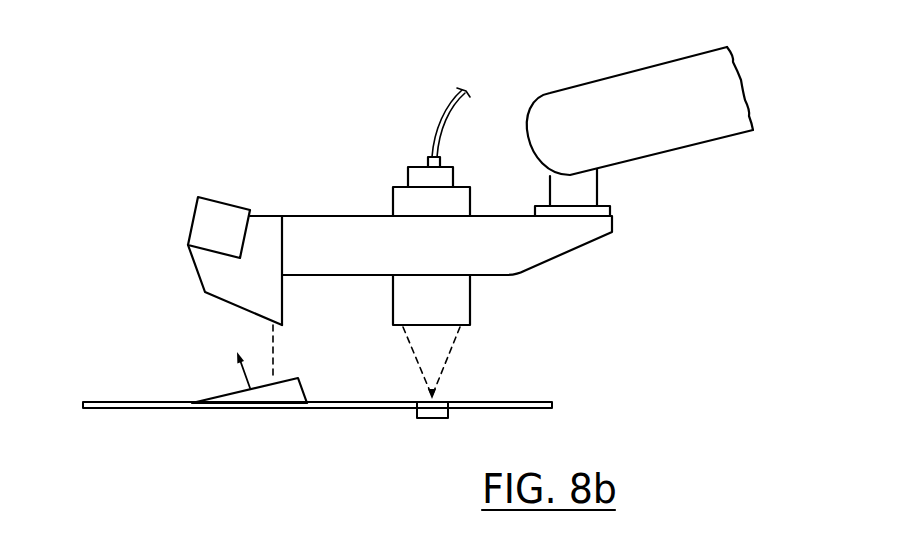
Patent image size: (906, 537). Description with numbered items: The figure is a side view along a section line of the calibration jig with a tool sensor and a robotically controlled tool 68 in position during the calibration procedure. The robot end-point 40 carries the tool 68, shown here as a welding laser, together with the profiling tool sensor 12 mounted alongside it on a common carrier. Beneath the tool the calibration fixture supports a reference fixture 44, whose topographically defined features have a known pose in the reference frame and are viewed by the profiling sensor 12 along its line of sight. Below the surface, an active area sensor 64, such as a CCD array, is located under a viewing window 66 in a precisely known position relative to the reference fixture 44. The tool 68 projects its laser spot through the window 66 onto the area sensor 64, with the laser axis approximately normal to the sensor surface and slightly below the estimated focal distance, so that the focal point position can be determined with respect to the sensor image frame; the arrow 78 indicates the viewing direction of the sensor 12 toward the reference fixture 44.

The sensor head 12 is at (192, 225).
The end-point 40 is at (612, 212).
The reference fixture 44 is at (222, 392).
The active area sensor 64 is at (417, 417).
The viewing window 66 is at (440, 400).
The robotically controlled tool 68 is at (463, 313).
The direction arrow 78 is at (243, 377).